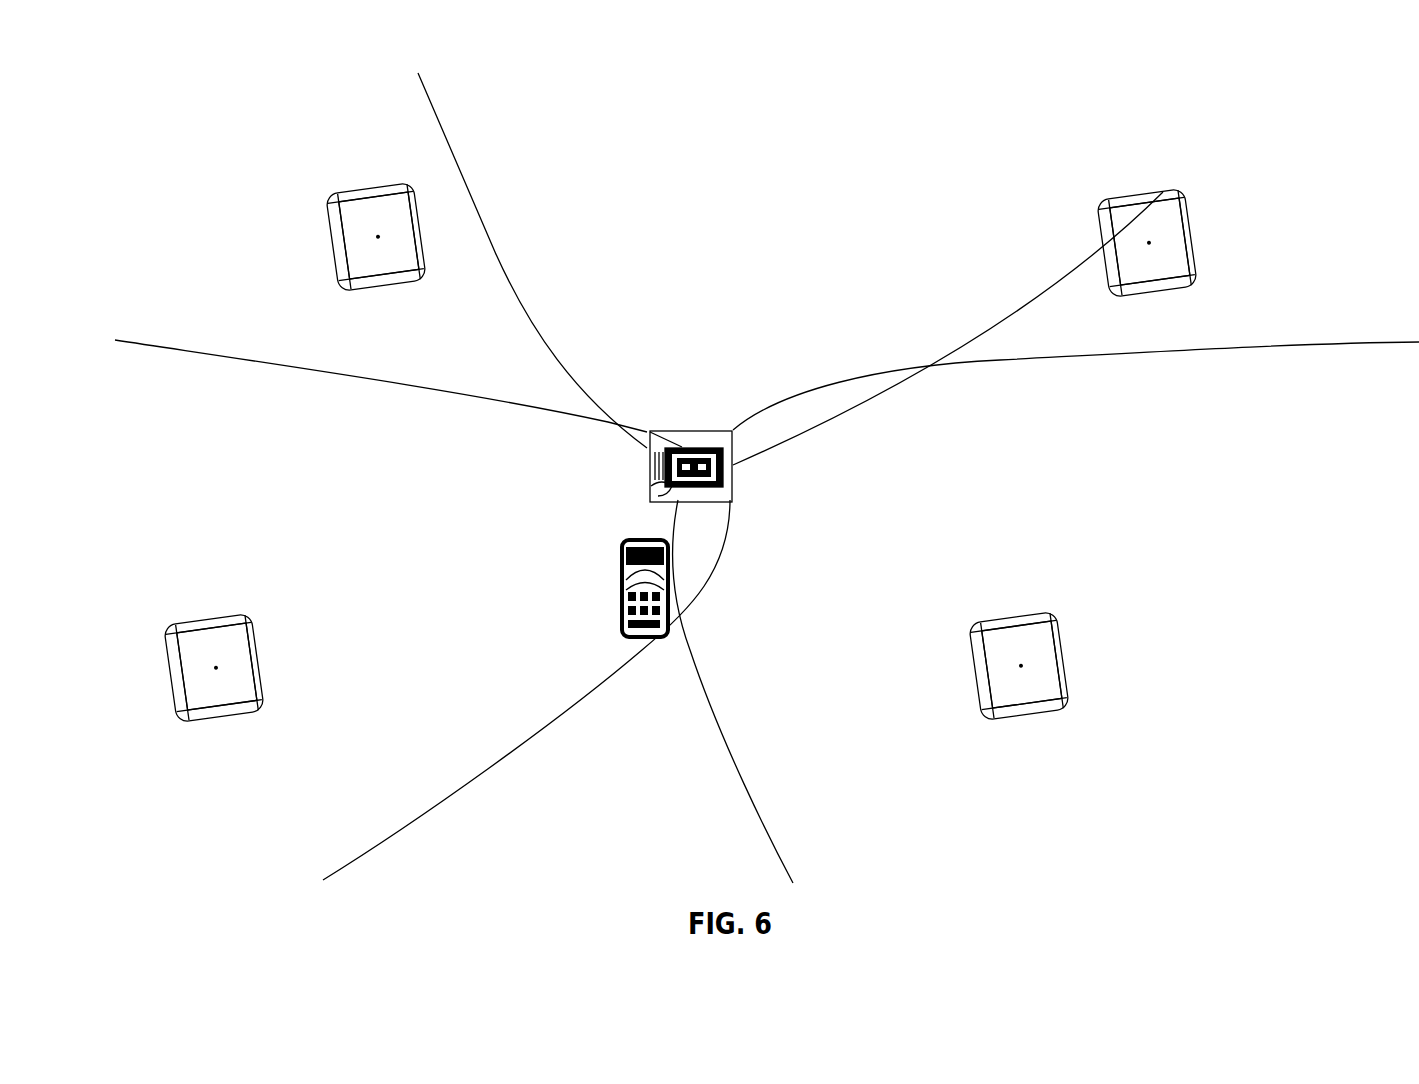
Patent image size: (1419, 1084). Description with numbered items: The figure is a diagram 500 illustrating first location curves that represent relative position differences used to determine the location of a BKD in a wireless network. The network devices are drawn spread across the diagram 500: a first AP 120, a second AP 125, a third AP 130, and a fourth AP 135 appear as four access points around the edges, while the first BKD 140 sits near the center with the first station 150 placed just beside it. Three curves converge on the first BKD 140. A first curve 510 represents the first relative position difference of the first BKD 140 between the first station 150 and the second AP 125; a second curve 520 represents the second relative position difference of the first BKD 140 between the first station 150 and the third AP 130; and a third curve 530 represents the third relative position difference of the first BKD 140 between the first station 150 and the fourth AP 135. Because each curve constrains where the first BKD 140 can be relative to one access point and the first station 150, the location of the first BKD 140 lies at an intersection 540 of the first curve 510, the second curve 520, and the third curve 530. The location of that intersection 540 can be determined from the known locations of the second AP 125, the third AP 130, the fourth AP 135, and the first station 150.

The diagram 500 is at (1268, 96).
The first curve 510 is at (478, 186).
The second curve 520 is at (850, 372).
The third curve 530 is at (448, 783).
The intersection 540 is at (757, 491).
The first BKD 140 is at (690, 422).
The first station 150 is at (610, 580).
The first AP 120 is at (310, 196).
The second AP 125 is at (1208, 219).
The third AP 130 is at (1082, 646).
The fourth AP 135 is at (150, 630).